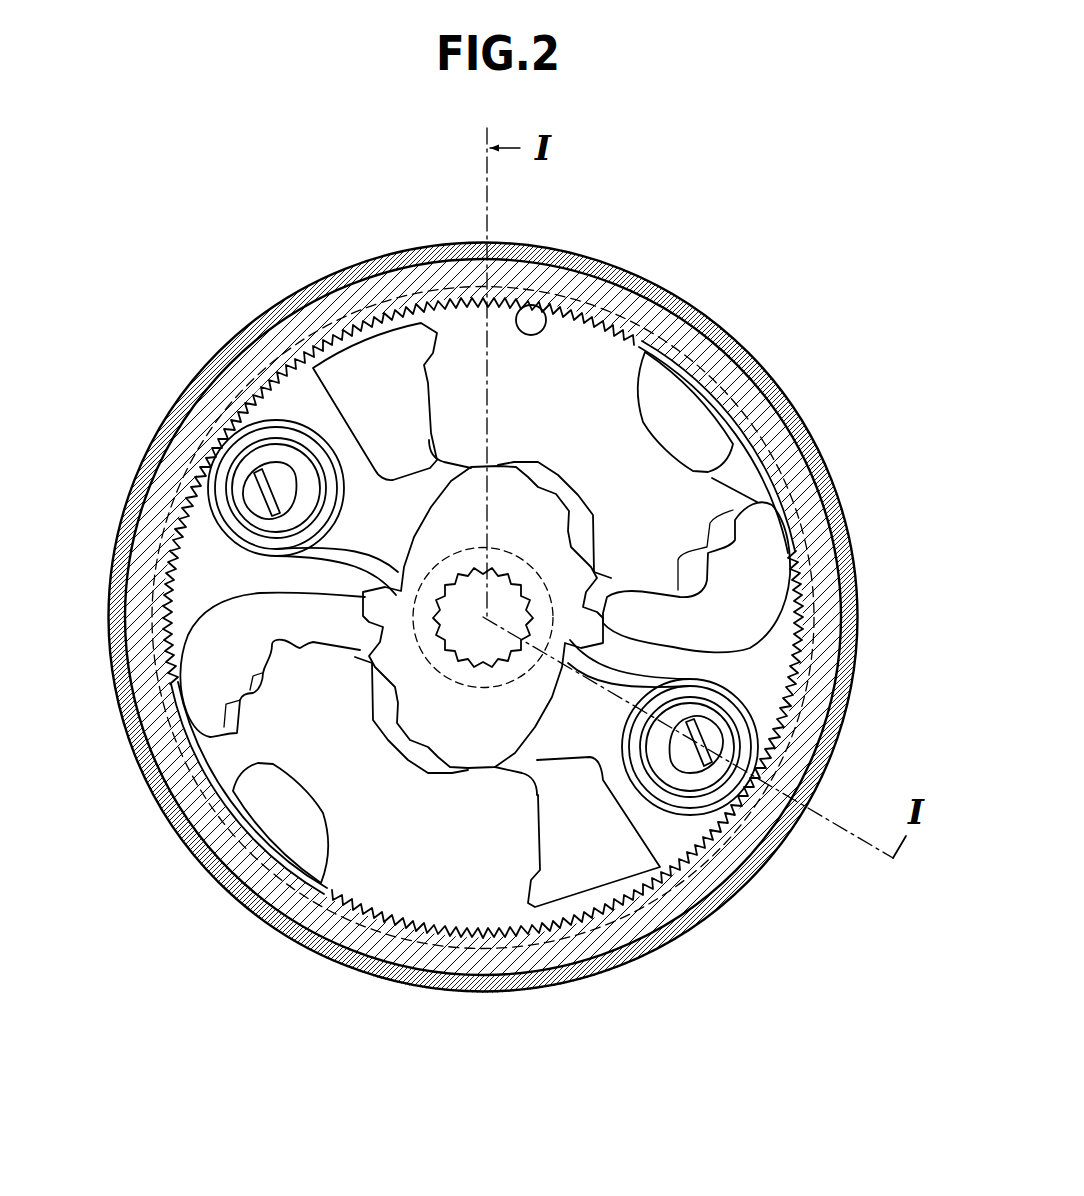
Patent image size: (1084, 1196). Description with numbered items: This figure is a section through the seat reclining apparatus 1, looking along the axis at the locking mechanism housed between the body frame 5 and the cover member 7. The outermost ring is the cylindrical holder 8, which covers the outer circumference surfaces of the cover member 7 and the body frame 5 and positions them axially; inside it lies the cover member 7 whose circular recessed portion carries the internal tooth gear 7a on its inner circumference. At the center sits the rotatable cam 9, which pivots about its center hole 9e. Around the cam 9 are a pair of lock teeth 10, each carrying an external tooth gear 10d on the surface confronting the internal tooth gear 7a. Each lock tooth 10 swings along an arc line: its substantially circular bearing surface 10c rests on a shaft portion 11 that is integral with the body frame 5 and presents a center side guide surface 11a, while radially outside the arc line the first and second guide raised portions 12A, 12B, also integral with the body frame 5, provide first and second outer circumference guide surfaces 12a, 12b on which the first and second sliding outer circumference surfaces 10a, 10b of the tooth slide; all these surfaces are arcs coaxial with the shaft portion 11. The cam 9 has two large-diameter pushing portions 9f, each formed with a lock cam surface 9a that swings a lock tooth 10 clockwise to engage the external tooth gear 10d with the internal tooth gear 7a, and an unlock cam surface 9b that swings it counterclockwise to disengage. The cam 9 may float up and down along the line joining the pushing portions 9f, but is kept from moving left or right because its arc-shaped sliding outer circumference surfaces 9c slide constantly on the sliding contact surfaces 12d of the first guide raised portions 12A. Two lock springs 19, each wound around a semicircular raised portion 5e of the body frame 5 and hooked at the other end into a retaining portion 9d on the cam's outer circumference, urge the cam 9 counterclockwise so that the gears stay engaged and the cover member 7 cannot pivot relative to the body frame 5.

The seat reclining apparatus 1 is at (767, 976).
The body frame 5 is at (275, 372).
The raised portion 5e is at (325, 635).
The cover member 7 is at (262, 366).
The internal tooth gear 7a is at (530, 306).
The holder 8 is at (212, 362).
The cam 9 is at (483, 617).
The lock cam surface 9a is at (500, 461).
The unlock cam surface 9b is at (576, 492).
The sliding outer circumference surface 9c is at (351, 612).
The retaining portion 9d is at (398, 592).
The center hole 9e is at (483, 618).
The pushing portion 9f is at (512, 492).
The lock tooth 10 is at (483, 606).
The first sliding outer circumference surface 10a is at (349, 614).
The second sliding outer circumference surface 10b is at (612, 812).
The bearing surface 10c is at (305, 824).
The external tooth gear 10d is at (587, 300).
The shaft portion 11 is at (483, 617).
The center side guide surface 11a is at (342, 838).
The first guide raised portion 12A is at (485, 607).
The second guide raised portion 12B is at (486, 615).
The first outer circumference guide surface 12a is at (279, 649).
The second outer circumference guide surface 12b is at (531, 822).
The sliding contact surface 12d is at (361, 600).
The lock spring 19 is at (262, 487).